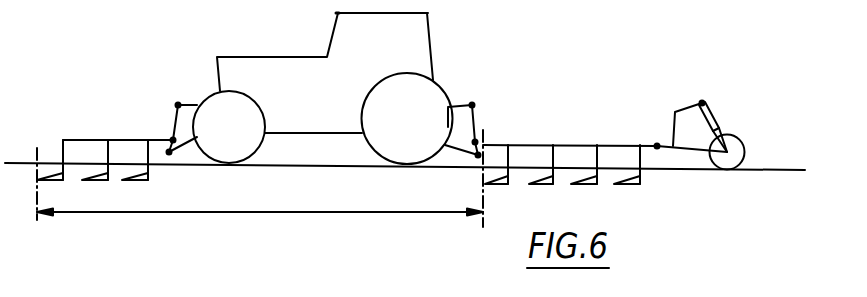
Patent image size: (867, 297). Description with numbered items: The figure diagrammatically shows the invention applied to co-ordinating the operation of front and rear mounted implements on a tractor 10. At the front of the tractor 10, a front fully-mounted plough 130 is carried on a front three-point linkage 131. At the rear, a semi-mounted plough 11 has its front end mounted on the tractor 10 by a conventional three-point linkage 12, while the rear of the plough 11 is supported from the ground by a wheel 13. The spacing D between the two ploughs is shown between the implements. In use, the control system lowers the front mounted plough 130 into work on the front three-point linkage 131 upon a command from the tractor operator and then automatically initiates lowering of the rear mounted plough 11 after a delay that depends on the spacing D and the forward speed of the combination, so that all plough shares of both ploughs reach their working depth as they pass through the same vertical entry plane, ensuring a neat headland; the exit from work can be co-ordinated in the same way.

The tractor 10 is at (248, 65).
The semi-mounted plough 11 is at (572, 143).
The 3-point linkage 12 is at (457, 103).
The wheel 13 is at (745, 134).
The front fully-mounted plough 130 is at (87, 140).
The front 3-point linkage 131 is at (192, 101).
The spacing D is at (165, 213).